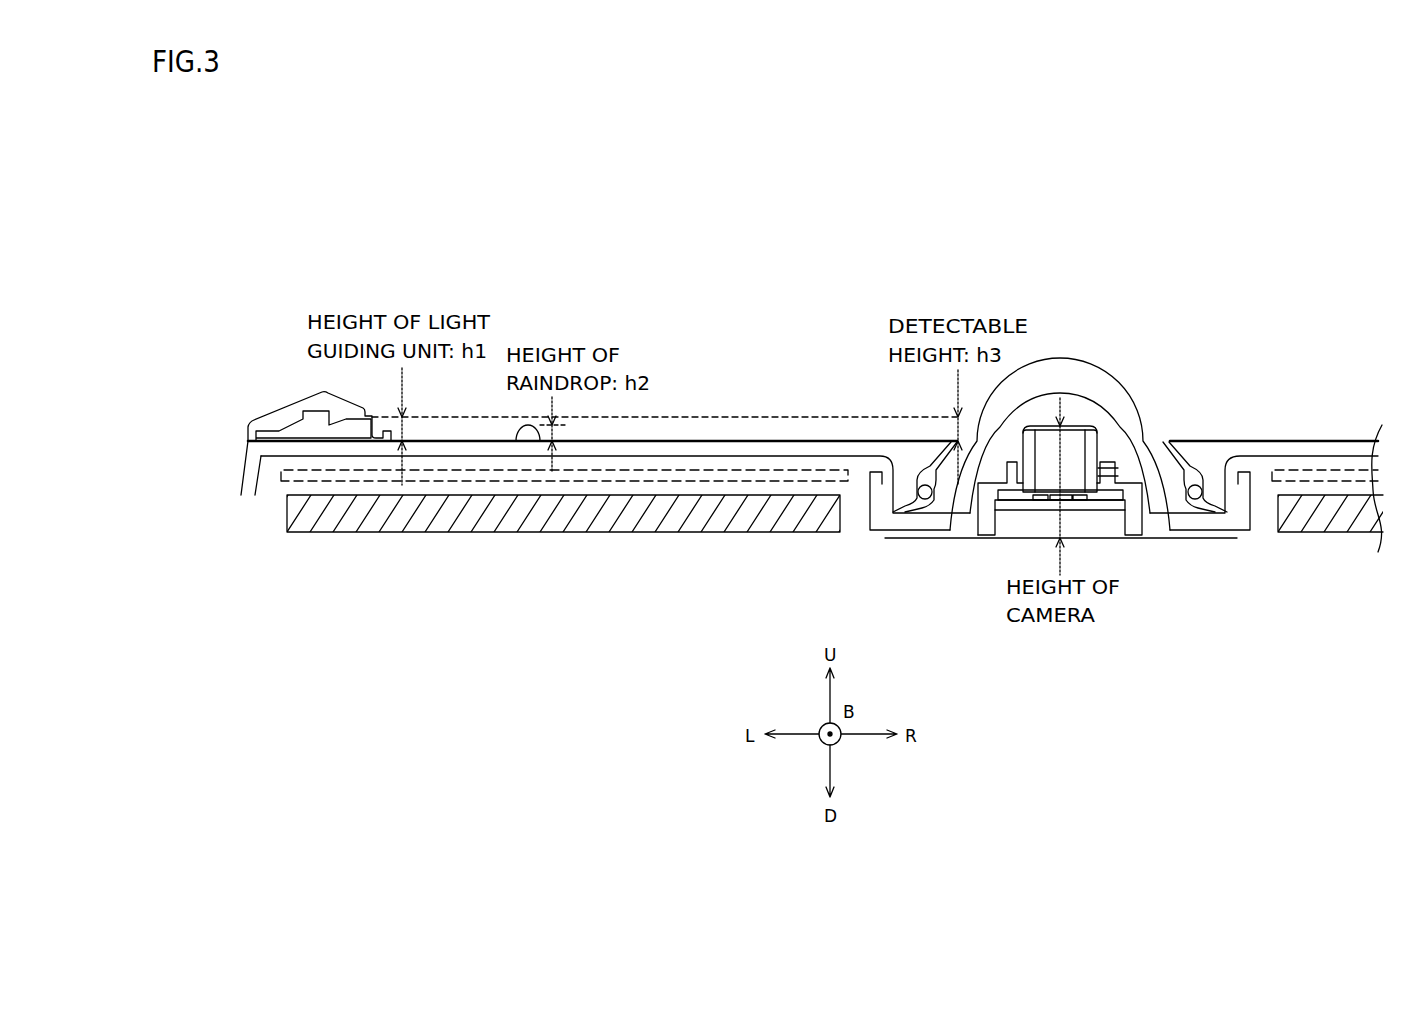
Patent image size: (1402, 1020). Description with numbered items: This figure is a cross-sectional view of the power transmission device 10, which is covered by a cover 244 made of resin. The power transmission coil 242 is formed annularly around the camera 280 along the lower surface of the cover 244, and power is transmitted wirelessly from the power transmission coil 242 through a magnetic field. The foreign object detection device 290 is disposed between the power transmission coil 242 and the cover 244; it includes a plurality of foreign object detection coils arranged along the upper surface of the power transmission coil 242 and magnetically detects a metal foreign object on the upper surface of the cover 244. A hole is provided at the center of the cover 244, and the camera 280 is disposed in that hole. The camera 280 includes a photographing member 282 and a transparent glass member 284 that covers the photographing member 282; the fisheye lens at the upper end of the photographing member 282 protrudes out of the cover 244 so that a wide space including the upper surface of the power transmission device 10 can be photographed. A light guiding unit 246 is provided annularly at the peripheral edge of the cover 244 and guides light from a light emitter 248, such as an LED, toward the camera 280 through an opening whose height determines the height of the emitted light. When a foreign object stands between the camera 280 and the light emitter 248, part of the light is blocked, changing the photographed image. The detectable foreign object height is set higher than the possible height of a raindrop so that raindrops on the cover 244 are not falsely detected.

The power transmission device 10 is at (848, 188).
The power transmission coil 242 is at (546, 520).
The cover 244 is at (819, 448).
The light guiding unit 246 is at (275, 420).
The light emitter 248 is at (314, 416).
The camera 280 is at (1096, 378).
The photographing member 282 is at (1100, 445).
The transparent glass member 284 is at (1103, 370).
The foreign object detection device 290 is at (773, 477).